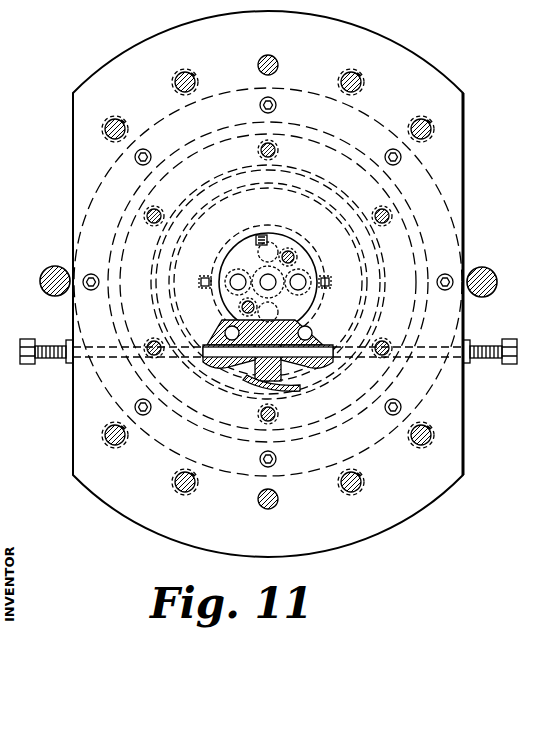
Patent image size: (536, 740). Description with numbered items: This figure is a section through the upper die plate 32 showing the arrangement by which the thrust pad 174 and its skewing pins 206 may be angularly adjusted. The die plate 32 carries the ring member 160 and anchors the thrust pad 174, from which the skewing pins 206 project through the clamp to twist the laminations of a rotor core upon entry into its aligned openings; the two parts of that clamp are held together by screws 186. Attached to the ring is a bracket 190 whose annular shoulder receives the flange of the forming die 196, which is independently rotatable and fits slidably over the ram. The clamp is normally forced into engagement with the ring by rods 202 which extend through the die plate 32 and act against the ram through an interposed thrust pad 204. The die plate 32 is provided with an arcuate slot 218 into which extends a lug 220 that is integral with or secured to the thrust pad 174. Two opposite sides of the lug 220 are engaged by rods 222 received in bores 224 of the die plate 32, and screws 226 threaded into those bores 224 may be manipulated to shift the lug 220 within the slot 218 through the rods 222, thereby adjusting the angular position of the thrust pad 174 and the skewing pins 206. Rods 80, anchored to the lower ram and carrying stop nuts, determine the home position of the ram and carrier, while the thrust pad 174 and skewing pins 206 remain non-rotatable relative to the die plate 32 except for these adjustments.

The upper die plate 32 is at (465, 152).
The rods 80 is at (52, 266).
The ring member 160 is at (438, 188).
The thrust pad 174 is at (373, 283).
The screws 186 is at (292, 252).
The bracket 190 is at (407, 220).
The forming die 196 is at (383, 248).
The rods 202 is at (230, 278).
The thrust pad 204 is at (317, 263).
The skewing pins 206 is at (270, 248).
The arcuate slot 218 is at (292, 386).
The lug 220 is at (258, 368).
The rods 222 is at (212, 365).
The bores 224 is at (225, 332).
The screws 226 is at (47, 344).